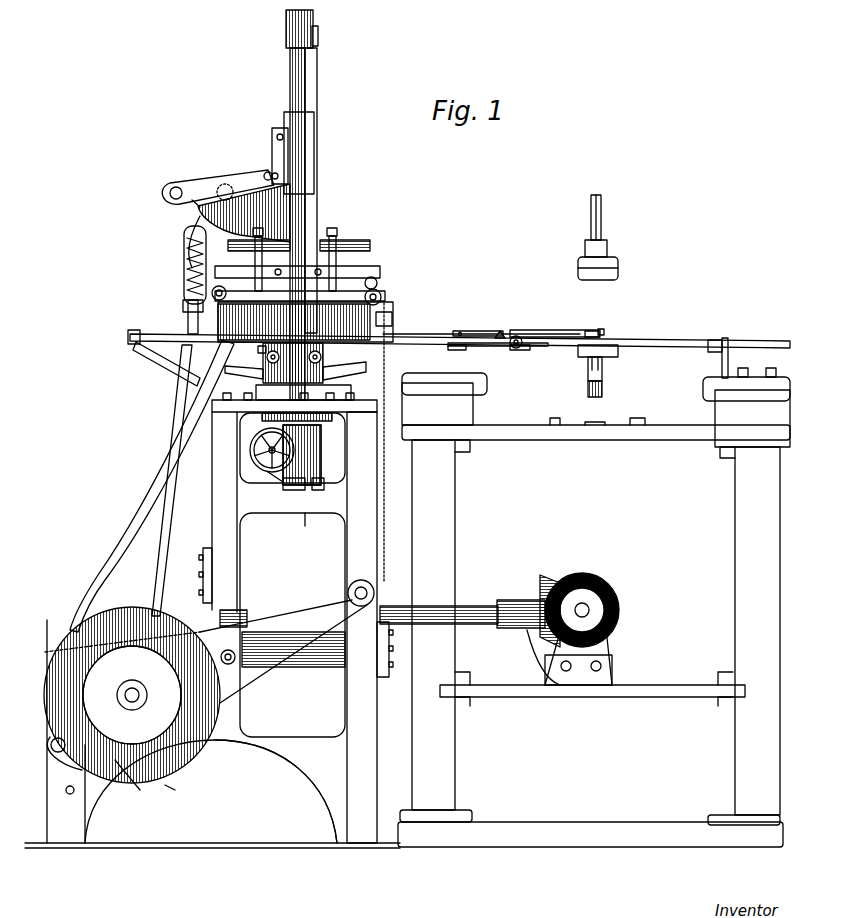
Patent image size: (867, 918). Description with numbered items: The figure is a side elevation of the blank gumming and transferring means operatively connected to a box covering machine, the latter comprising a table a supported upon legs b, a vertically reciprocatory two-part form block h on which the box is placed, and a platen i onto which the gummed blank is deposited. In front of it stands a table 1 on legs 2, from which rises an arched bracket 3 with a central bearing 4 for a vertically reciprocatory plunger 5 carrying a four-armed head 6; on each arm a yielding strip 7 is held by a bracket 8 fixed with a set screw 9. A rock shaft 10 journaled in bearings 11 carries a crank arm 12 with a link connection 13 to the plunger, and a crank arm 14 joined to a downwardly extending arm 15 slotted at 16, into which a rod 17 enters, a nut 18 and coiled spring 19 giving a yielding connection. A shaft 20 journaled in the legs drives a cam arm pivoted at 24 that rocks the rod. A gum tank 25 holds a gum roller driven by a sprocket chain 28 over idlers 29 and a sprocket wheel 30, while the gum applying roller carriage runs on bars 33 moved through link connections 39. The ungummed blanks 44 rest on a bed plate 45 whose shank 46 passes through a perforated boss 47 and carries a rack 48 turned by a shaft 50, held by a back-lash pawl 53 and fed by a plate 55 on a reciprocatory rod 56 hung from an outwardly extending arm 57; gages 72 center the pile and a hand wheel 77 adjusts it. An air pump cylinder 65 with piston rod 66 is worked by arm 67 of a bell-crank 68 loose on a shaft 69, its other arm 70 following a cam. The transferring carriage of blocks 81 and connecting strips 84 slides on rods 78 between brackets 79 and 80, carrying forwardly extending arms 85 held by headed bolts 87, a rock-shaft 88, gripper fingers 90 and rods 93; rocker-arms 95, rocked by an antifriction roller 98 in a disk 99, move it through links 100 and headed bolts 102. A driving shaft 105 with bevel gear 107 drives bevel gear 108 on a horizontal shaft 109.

The table 1 is at (350, 408).
The legs 2 is at (212, 630).
The arched bracket 3 is at (312, 212).
The central bearing 4 is at (313, 132).
The vertically reciprocatory plunger 5 is at (306, 98).
The four-armed head 6 is at (299, 236).
The yielding strip 7 is at (264, 288).
The bracket 8 is at (262, 270).
The set screw 9 is at (299, 254).
The rock shaft 10 is at (172, 200).
The bearings 11 is at (192, 205).
The crank arm 12 is at (240, 178).
The link connection 13 is at (272, 152).
The crank arm 14 is at (225, 183).
The downwardly extending arm 15 is at (202, 239).
The slotted portion 16 is at (184, 286).
The rod 17 is at (178, 392).
The nut 18 is at (184, 254).
The coiled spring 19 is at (186, 266).
The shaft 20 is at (140, 693).
The pivot 24 is at (232, 664).
The gum tank 25 is at (305, 322).
The sprocket chain 28 is at (388, 362).
The idlers 29 is at (374, 590).
The sprocket wheel 30 is at (132, 695).
The bars 33 is at (381, 298).
The link connections 39 is at (226, 290).
The ungummed blanks 44 is at (258, 349).
The bed plate 45 is at (348, 370).
The shank 46 is at (292, 490).
The perforated boss 47 is at (318, 452).
The rack 48 is at (274, 488).
The shaft 50 is at (256, 466).
The back-lash pawl 53 is at (252, 432).
The plate 55 is at (322, 474).
The reciprocatory rod 56 is at (317, 83).
The outwardly extending arm 57 is at (318, 40).
The air pump cylinder 65 is at (318, 668).
The piston rod 66 is at (268, 612).
The arm of bell-crank 67 is at (118, 644).
The bell-crank 68 is at (52, 746).
The shaft 69 is at (55, 756).
The arm of bell-crank 70 is at (170, 789).
The gages 72 is at (262, 357).
The hand wheel 77 is at (268, 452).
The rods 78 is at (142, 338).
The bracket 79 is at (728, 345).
The bracket 80 is at (160, 362).
The blocks 81 is at (455, 350).
The connecting strips 84 is at (482, 349).
The forwardly extending arms 85 is at (550, 330).
The headed bolts 87 is at (462, 327).
The rock-shaft 88 is at (503, 326).
The gripper finger 90 is at (604, 330).
The rod 93 is at (600, 324).
The rocker-arms 95 is at (160, 454).
The antifriction roller 98 is at (134, 782).
The disk 99 is at (228, 770).
The link 100 is at (412, 333).
The headed bolt 102 is at (514, 348).
The driving shaft 105 is at (590, 606).
The bevel gear 107 is at (600, 580).
The bevel gear 108 is at (548, 575).
The horizontal shaft 109 is at (195, 624).
The table a is at (596, 436).
The legs b is at (594, 607).
The two-part form block h is at (608, 237).
The platen i is at (618, 356).